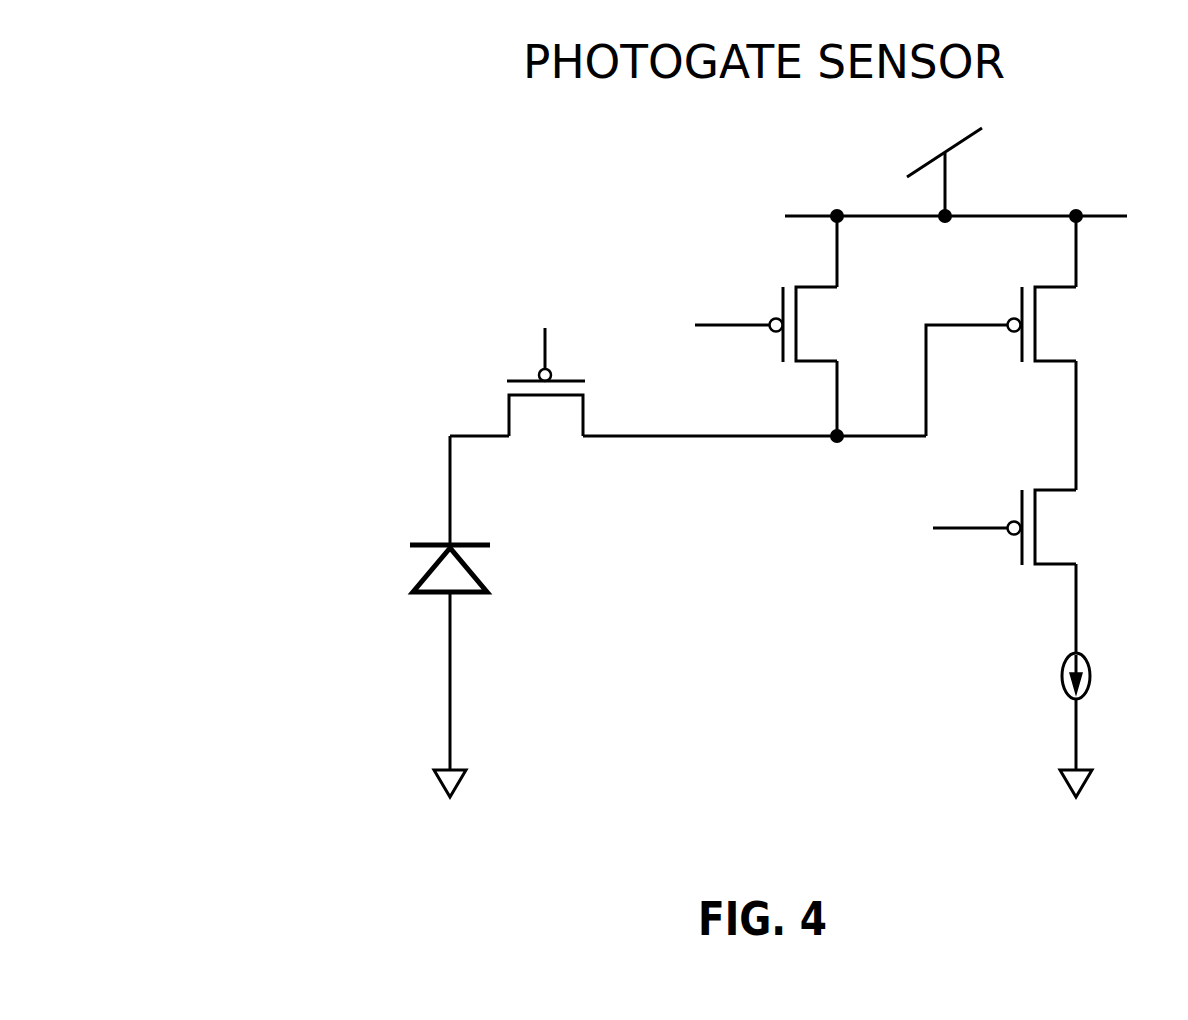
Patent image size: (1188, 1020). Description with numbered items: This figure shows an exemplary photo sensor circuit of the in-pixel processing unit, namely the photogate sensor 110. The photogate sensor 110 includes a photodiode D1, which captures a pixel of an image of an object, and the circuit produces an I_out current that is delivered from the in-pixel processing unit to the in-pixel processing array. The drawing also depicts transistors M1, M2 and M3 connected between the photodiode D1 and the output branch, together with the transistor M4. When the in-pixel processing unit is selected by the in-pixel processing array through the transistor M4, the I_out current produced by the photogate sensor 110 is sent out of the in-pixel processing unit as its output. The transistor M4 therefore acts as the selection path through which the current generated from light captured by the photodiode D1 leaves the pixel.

The photogate sensor 110 is at (215, 44).
The transfer transistor M1 is at (546, 382).
The reset transistor M2 is at (774, 324).
The source follower transistor M3 is at (1051, 324).
The transistor M4 is at (1013, 527).
The photodiode D1 is at (478, 568).